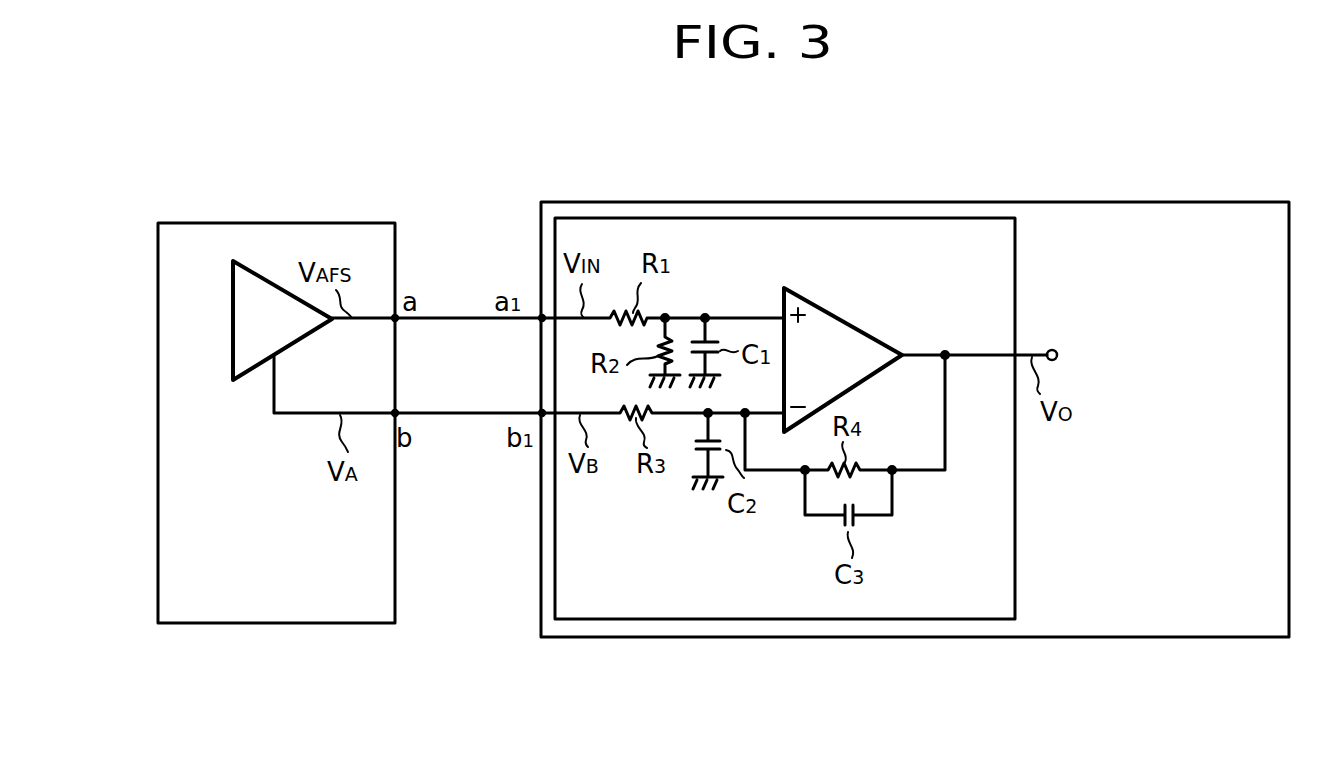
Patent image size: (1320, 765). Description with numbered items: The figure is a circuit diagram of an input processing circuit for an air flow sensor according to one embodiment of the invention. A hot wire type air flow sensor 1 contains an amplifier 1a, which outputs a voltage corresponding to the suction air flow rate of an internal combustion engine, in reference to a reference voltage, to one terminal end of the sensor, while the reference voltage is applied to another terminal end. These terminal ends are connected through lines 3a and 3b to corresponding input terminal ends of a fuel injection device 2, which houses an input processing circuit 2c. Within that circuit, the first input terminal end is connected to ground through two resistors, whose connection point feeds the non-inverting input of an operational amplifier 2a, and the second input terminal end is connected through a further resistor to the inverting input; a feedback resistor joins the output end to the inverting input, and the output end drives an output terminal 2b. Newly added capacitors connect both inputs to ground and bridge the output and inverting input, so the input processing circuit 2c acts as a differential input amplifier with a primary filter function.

The air flow sensor 1 is at (296, 223).
The amplifier 1a is at (233, 275).
The fuel injection device 2 is at (1112, 202).
The operational amplifier 2a is at (848, 320).
The output terminal 2b is at (1058, 355).
The input processing circuit 2c is at (1015, 290).
The line 3a is at (460, 318).
The line 3b is at (452, 415).